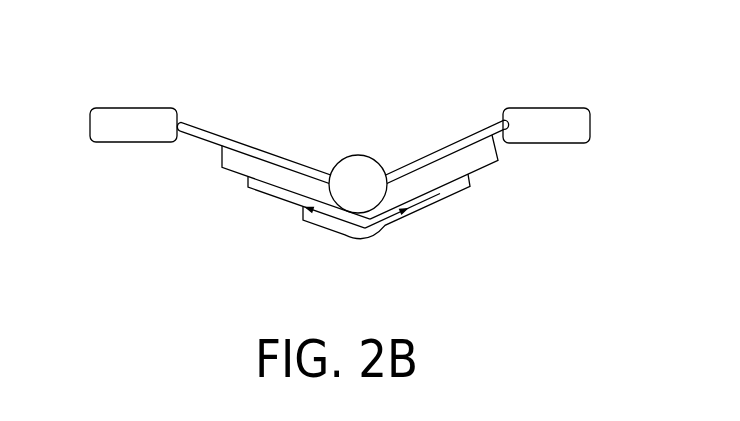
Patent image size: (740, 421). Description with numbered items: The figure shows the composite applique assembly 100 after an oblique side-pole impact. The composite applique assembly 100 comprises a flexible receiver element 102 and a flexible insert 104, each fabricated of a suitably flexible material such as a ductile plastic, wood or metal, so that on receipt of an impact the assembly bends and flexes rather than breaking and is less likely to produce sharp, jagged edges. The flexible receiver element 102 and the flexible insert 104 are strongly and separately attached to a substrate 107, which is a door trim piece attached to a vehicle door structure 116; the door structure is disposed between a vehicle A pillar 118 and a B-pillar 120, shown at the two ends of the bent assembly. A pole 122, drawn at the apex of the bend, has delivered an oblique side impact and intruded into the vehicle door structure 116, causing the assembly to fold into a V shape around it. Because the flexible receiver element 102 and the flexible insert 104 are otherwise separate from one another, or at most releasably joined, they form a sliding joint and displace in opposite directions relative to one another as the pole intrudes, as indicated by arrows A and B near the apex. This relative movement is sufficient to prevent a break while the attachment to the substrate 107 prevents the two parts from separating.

The composite applique assembly 100 is at (277, 283).
The flexible receiver element 102 is at (448, 197).
The flexible insert 104 is at (258, 197).
The substrate 107 is at (498, 162).
The vehicle door structure 116 is at (249, 146).
The vehicle A pillar 118 is at (545, 108).
The B-pillar 120 is at (133, 108).
The pole 122 is at (360, 168).
The arrow A is at (333, 233).
The arrow B is at (385, 230).